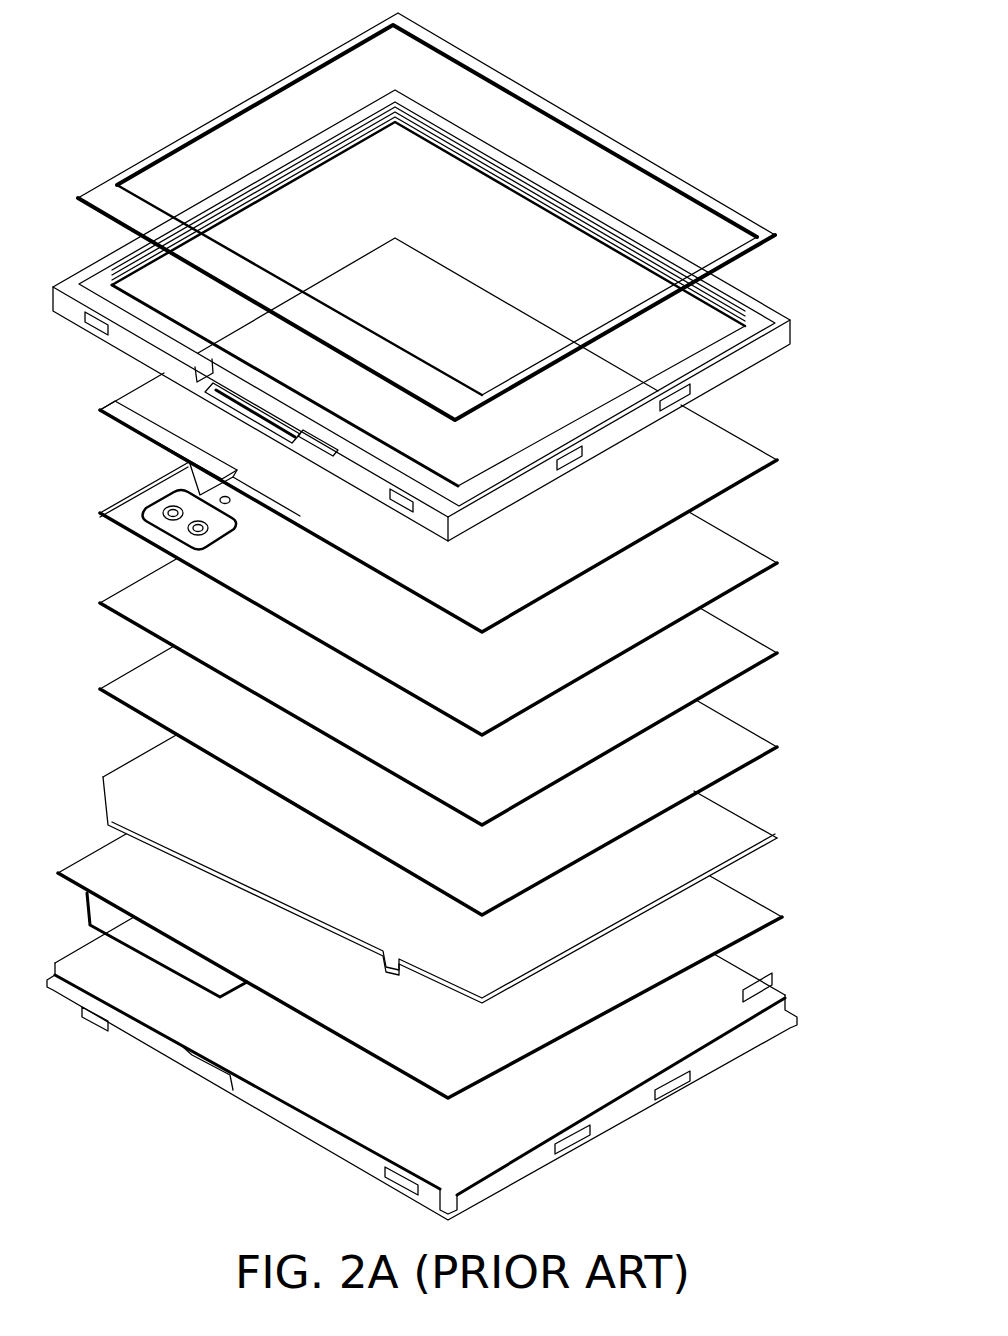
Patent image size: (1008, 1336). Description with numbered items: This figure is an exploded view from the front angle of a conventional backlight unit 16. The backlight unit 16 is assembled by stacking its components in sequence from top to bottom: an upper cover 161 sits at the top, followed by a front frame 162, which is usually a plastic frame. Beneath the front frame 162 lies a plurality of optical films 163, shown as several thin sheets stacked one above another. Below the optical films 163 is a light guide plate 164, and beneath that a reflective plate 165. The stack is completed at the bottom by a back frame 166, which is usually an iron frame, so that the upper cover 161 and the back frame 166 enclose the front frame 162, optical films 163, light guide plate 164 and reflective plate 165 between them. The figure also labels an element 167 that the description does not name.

The backlight unit 16 is at (840, 212).
The upper cover 161 is at (768, 238).
The front frame 162 is at (768, 310).
The optical films 163 is at (768, 460).
The light guide plate 164 is at (768, 824).
The reflective plate 165 is at (768, 902).
The back frame 166 is at (768, 990).
The flexible circuit board 167 is at (170, 413).